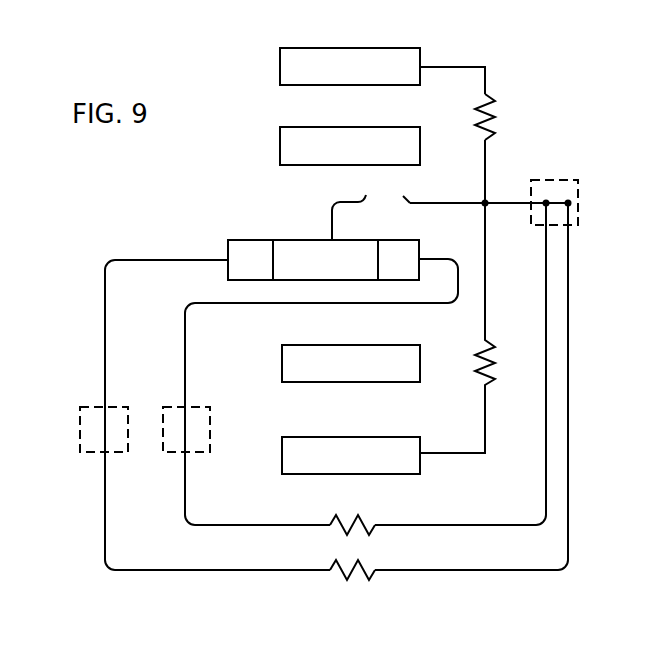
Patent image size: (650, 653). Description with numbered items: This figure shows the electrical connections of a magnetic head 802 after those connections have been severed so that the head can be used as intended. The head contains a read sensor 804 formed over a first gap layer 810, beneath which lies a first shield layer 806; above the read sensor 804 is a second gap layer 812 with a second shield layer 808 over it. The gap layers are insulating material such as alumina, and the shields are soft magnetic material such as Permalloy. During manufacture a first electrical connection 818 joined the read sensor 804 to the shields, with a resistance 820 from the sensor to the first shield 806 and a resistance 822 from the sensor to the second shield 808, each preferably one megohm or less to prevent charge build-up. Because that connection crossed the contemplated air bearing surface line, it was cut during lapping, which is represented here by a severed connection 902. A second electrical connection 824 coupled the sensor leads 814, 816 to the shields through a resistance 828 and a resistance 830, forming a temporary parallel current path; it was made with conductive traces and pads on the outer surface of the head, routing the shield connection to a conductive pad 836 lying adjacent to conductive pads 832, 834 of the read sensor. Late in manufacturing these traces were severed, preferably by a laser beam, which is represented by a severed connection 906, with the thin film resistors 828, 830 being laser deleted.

The magnetic head 802 is at (493, 47).
The read sensor 804 is at (315, 240).
The first shield layer 806 is at (282, 457).
The second shield layer 808 is at (280, 69).
The first gap layer 810 is at (282, 365).
The second gap layer 812 is at (280, 149).
The sensor lead 814 is at (236, 240).
The sensor lead 816 is at (405, 240).
The first electrical connection 818 is at (451, 188).
The resistance 820 is at (478, 368).
The resistance 822 is at (494, 104).
The second electrical connection 824 is at (96, 328).
The resistance 828 is at (357, 568).
The resistance 830 is at (357, 523).
The conductive pad 832 is at (103, 407).
The conductive pad 834 is at (186, 407).
The conductive pad 836 is at (553, 180).
The severed connection 902 is at (378, 196).
The severed connection 906 is at (441, 583).